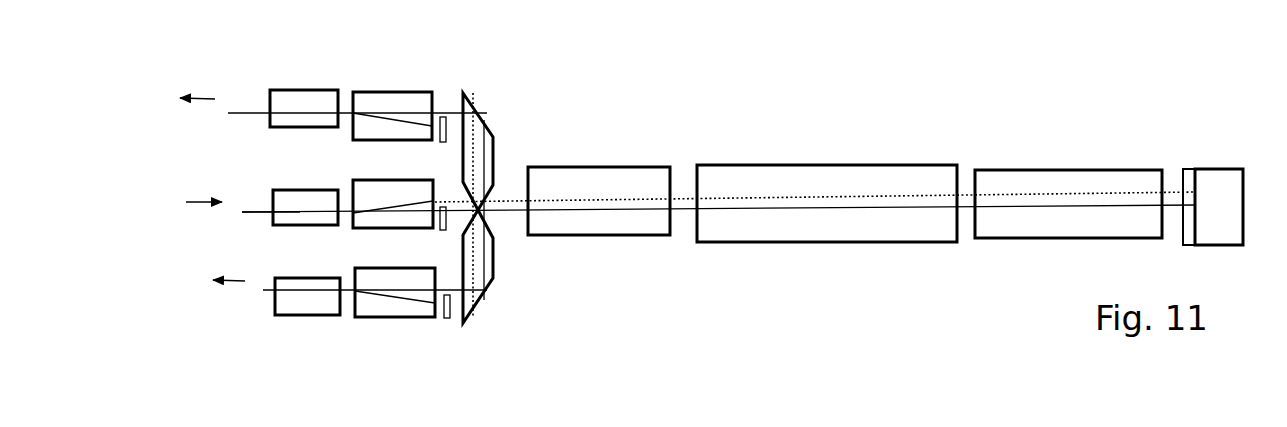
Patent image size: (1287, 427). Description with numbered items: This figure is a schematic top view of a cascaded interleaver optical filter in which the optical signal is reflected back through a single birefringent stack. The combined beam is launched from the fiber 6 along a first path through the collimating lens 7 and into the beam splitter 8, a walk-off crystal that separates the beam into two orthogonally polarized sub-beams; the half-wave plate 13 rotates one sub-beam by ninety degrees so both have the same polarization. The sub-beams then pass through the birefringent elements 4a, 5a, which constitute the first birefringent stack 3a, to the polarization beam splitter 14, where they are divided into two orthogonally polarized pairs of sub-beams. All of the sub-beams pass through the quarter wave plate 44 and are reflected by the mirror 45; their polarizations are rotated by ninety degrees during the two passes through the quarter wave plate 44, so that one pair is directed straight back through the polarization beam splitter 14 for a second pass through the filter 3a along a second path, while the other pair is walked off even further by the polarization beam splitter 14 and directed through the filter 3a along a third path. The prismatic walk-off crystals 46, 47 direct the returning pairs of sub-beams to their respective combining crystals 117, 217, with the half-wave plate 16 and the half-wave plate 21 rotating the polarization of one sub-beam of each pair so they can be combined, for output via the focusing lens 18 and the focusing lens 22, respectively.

The focusing lens 18 is at (304, 88).
The combining crystal 117 is at (391, 90).
The half-wave plate 16 is at (443, 115).
The prismatic walk-off crystal 46 is at (497, 131).
The collimating lens 7 is at (270, 190).
The beam splitter 8 is at (391, 178).
The half-wave plate 13 is at (449, 205).
The fiber 6 is at (243, 226).
The focusing lens 22 is at (298, 320).
The combining crystal 217 is at (397, 320).
The half-wave plate 21 is at (449, 322).
The prismatic walk-off crystal 47 is at (498, 279).
The birefringent element 4a is at (598, 164).
The birefringent element 5a is at (828, 161).
The first birefringent stack 3a is at (727, 264).
The polarization beam splitter 14 is at (1068, 167).
The quarter wave plate 44 is at (1189, 166).
The mirror 45 is at (1245, 209).